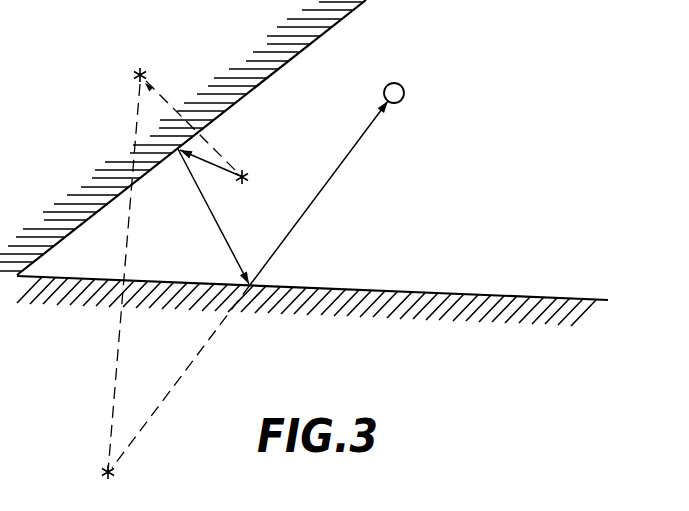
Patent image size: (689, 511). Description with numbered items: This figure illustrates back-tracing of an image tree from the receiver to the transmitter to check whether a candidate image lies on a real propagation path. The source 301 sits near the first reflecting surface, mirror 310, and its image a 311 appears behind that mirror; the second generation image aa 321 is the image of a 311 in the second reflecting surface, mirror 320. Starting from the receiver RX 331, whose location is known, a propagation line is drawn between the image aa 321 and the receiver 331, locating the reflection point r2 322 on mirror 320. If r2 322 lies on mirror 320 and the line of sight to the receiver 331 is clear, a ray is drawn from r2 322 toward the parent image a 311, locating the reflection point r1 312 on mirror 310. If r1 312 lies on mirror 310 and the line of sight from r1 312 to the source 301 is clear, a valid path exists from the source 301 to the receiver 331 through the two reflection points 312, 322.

The mirror 1 surface 310 is at (331, 46).
The mirror 2 surface 320 is at (514, 288).
The transmitter source 301 is at (244, 169).
The first generation image a 311 is at (132, 71).
The reflection point r1 312 is at (180, 153).
The reflection point r2 322 is at (255, 283).
The receiver RX 331 is at (395, 104).
The second generation image aa 321 is at (102, 473).